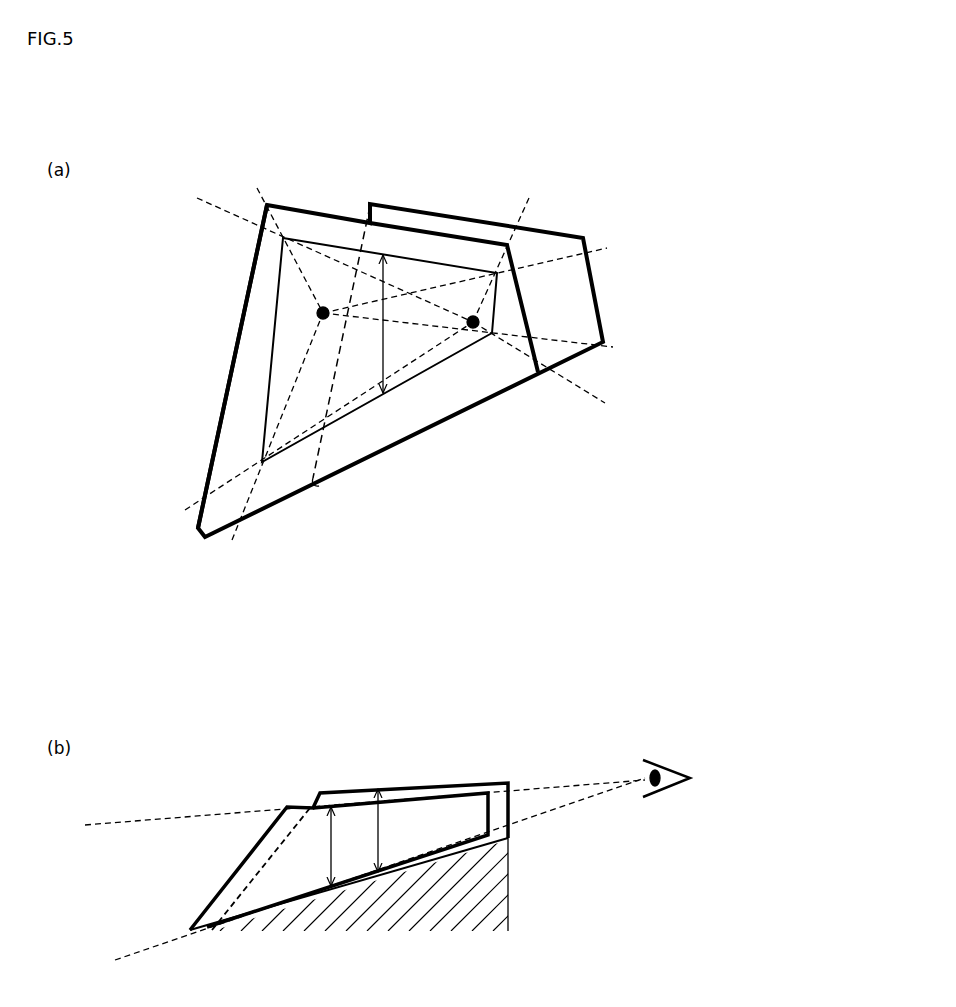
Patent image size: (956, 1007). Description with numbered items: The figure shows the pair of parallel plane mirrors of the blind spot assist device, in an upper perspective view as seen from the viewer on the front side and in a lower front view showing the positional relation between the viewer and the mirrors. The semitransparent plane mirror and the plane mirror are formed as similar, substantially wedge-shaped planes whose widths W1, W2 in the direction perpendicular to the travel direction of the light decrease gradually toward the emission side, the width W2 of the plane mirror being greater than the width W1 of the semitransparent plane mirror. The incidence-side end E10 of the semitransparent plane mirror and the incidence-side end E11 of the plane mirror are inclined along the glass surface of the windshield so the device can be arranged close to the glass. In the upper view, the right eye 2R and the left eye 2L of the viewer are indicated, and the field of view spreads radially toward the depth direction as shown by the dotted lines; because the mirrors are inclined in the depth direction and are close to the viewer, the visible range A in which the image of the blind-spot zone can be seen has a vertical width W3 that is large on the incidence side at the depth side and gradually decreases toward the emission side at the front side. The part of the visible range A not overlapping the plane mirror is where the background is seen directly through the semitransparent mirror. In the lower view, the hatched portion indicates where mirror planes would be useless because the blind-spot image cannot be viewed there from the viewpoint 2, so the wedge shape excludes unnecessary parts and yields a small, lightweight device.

The incidence-side end of the semitransparent plane mirror E10 is at (266, 208).
The incidence-side end of the plane mirror E11 is at (367, 212).
The visible range A is at (275, 318).
The left eye 2L is at (318, 316).
The right eye 2R is at (475, 327).
The viewpoint 2 is at (682, 762).
The width of the semitransparent plane mirror W1 is at (313, 846).
The width of the plane mirror W2 is at (360, 830).
The width of the visible range W3 is at (366, 324).